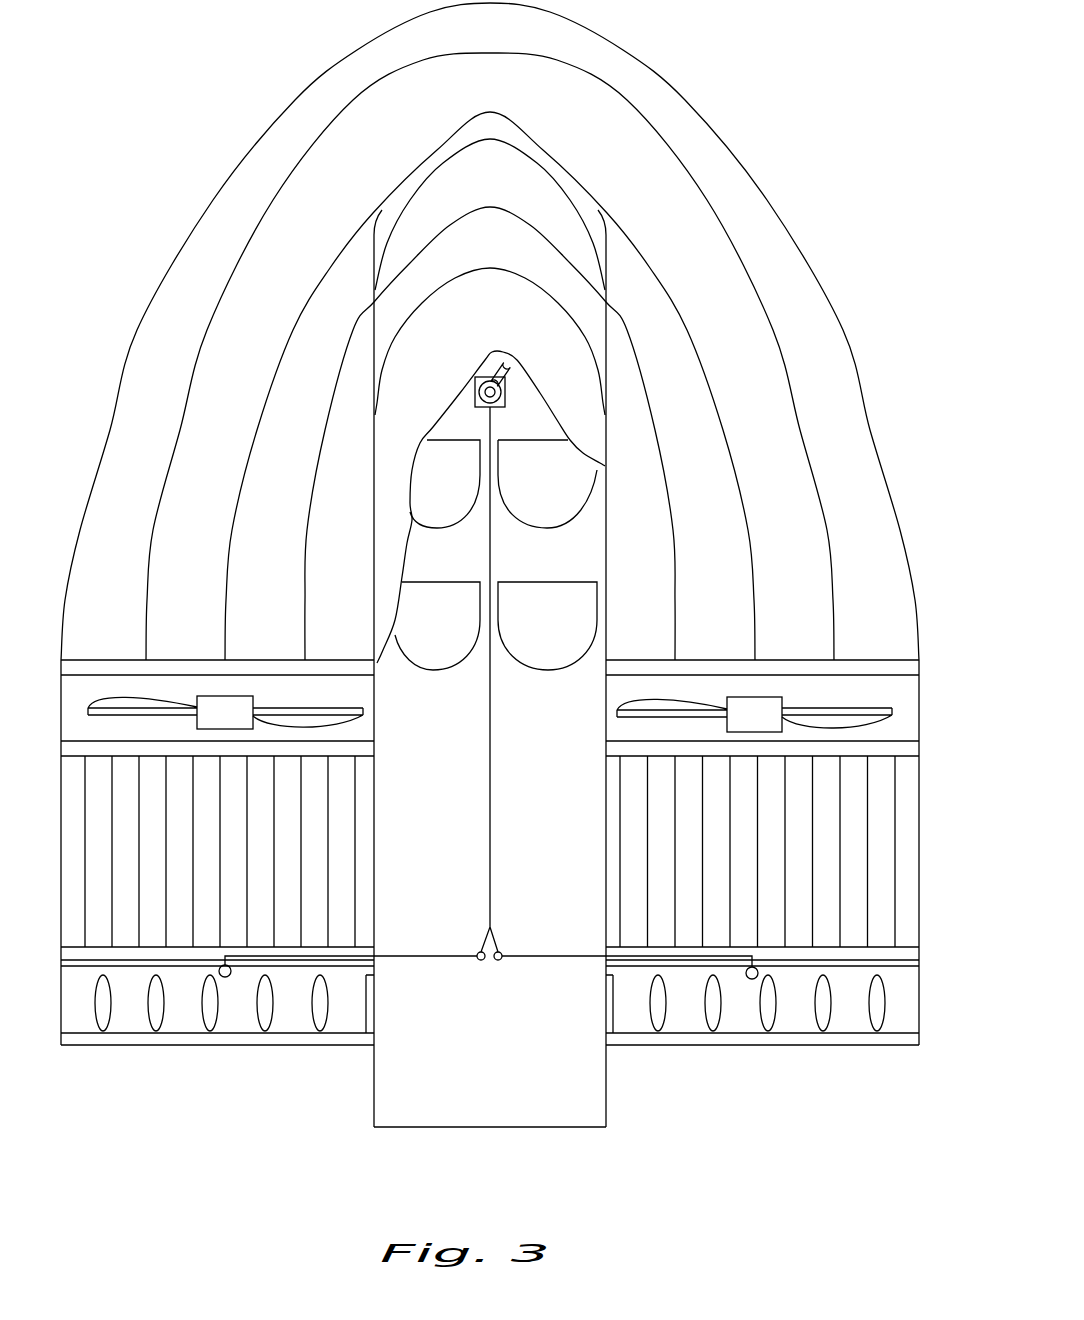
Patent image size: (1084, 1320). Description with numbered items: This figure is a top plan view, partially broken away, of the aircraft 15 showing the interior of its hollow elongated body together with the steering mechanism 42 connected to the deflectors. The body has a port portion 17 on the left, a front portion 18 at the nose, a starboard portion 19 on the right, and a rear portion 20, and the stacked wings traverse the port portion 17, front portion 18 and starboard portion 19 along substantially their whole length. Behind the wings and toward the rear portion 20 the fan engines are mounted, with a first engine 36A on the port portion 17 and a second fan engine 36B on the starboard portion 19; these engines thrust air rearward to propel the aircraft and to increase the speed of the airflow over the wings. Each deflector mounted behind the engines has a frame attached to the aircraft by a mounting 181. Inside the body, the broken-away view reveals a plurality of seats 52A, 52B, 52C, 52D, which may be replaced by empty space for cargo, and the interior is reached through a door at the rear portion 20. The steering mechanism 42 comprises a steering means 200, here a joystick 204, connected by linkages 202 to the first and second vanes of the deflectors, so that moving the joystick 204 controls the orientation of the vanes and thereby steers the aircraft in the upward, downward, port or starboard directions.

The outer shell 15 is at (645, 70).
The port portion 17 is at (376, 427).
The front portion 18 is at (488, 113).
The starboard portion 19 is at (606, 427).
The rear portion 20 is at (462, 1127).
The first engine 36A is at (374, 698).
The second fan engine 36B is at (606, 710).
The steering mechanism 42 is at (498, 915).
The seat 52A is at (503, 468).
The seat 52B is at (515, 580).
The seat 52C is at (452, 442).
The seat 52D is at (415, 580).
The mounting 181 is at (375, 992).
The steering means 200 is at (492, 371).
The linkages 202 is at (491, 688).
The joystick 204 is at (506, 375).